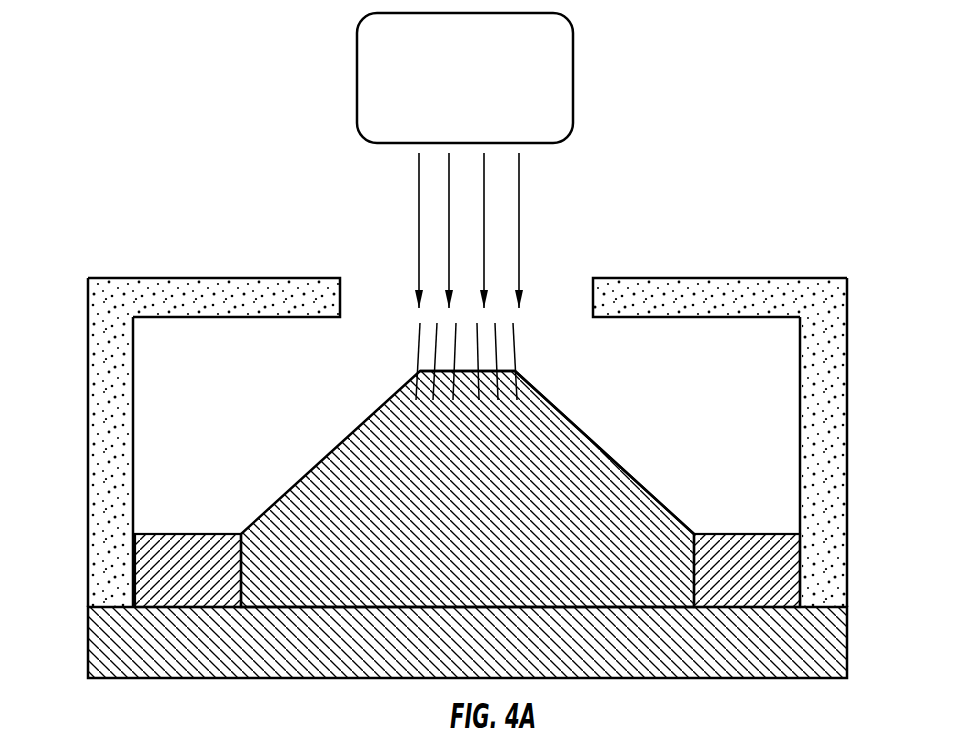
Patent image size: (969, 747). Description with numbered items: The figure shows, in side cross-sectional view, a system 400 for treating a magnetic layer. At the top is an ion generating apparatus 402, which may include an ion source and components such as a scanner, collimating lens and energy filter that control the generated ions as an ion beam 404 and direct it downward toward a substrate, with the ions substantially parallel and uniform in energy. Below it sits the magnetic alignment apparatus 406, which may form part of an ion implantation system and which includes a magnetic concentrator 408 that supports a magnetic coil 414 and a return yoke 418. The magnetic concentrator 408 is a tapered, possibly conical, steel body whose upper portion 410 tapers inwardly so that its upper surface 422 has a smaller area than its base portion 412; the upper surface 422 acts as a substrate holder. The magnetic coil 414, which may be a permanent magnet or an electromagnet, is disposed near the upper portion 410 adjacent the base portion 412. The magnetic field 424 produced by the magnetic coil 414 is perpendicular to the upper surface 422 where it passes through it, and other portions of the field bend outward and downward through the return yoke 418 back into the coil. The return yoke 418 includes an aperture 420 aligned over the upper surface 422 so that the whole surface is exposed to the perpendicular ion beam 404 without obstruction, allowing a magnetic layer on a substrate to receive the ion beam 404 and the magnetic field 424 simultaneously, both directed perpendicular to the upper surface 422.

The system 400 is at (77, 390).
The ion generating apparatus 402 is at (357, 64).
The ion beam 404 is at (373, 195).
The magnetic alignment apparatus 406 is at (88, 450).
The magnetic concentrator 408 is at (337, 447).
The upper portion 410 is at (608, 455).
The base portion 412 is at (88, 637).
The magnetic coil 414 is at (215, 534).
The return yoke 418 is at (228, 278).
The aperture 420 is at (370, 270).
The upper surface 422 is at (432, 368).
The magnetic field 424 is at (528, 331).